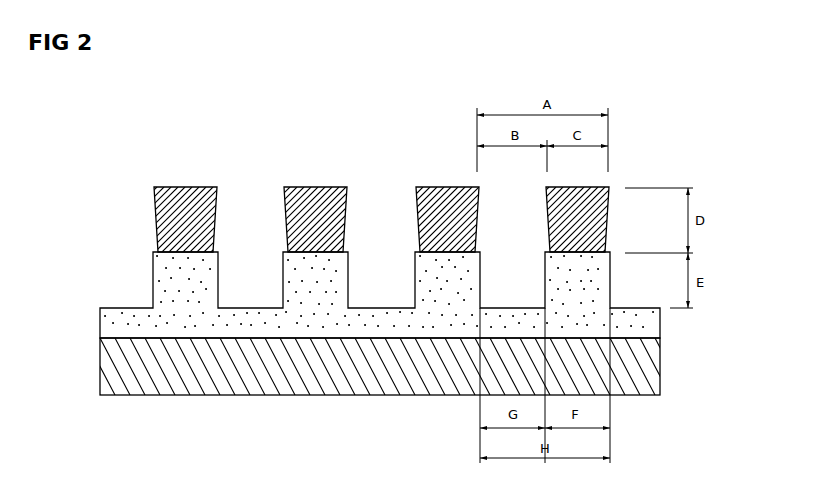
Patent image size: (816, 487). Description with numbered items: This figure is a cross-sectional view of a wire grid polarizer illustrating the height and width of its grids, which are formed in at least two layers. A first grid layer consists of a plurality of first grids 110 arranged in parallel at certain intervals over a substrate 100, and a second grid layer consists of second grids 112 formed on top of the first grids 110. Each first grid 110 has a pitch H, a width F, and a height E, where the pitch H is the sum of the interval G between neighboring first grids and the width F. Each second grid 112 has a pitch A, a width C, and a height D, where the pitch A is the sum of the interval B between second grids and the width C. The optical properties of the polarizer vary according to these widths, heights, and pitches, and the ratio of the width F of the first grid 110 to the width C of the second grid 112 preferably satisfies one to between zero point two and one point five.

The substrate 100 is at (100, 373).
The first grid 110 is at (160, 278).
The second grid 112 is at (157, 222).